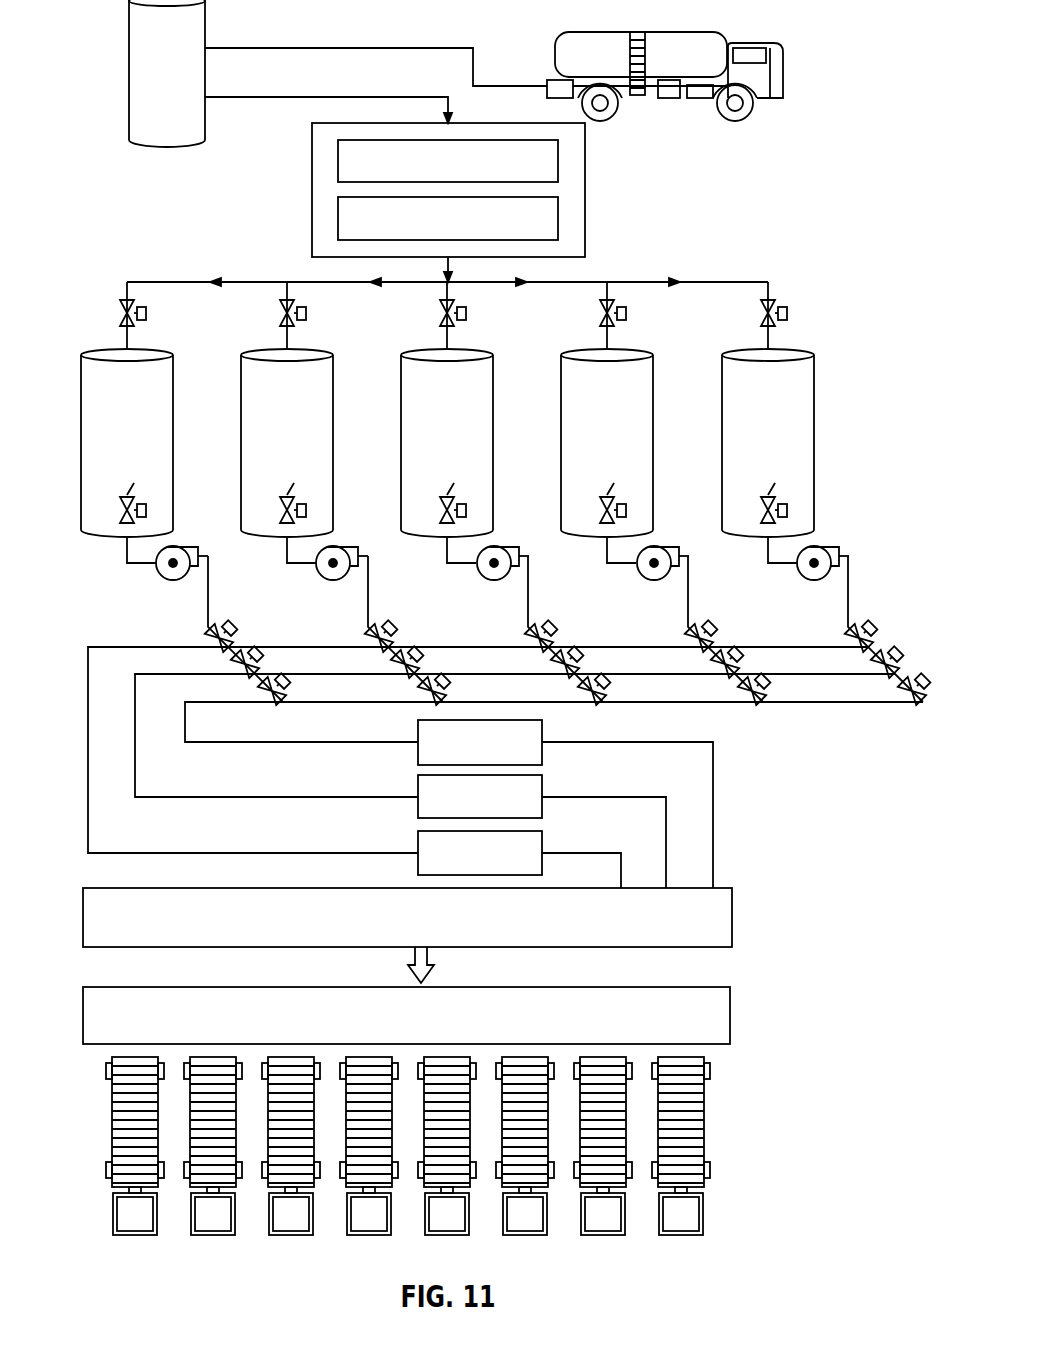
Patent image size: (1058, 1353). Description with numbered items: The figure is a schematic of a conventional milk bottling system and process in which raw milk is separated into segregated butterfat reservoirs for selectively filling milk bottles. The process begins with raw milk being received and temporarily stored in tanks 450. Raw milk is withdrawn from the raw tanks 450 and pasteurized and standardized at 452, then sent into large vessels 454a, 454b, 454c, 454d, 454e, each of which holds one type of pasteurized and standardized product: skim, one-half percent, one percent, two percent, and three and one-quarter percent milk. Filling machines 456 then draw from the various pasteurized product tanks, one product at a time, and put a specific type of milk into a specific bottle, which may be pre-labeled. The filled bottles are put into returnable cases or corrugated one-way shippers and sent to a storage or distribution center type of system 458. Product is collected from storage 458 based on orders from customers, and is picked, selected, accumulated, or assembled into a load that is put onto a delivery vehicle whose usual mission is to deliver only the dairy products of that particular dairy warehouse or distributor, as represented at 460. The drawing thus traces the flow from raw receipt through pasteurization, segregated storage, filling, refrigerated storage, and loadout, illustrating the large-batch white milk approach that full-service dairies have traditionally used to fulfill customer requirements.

The raw milk tanks 450 is at (167, 150).
The pasteurization and standardization 452 is at (585, 190).
The pasteurized product vessel 454a is at (80, 390).
The pasteurized product vessel 454b is at (240, 392).
The pasteurized product vessel 454c is at (400, 392).
The pasteurized product vessel 454d is at (560, 392).
The pasteurized product vessel 454e is at (722, 392).
The filling machines 456 is at (760, 801).
The storage or distribution center 458 is at (732, 917).
The delivery vehicle loading 460 is at (732, 1013).